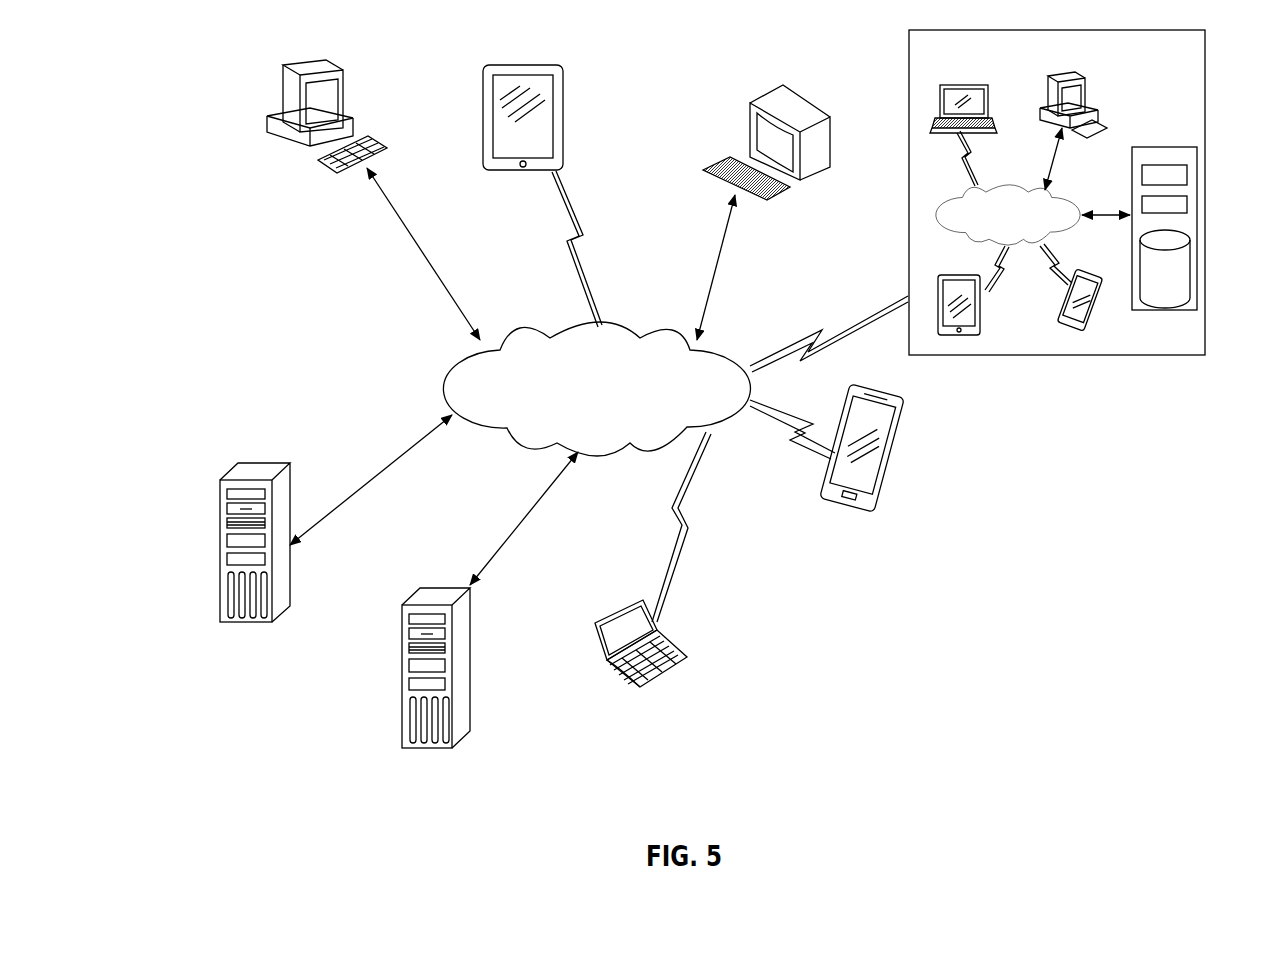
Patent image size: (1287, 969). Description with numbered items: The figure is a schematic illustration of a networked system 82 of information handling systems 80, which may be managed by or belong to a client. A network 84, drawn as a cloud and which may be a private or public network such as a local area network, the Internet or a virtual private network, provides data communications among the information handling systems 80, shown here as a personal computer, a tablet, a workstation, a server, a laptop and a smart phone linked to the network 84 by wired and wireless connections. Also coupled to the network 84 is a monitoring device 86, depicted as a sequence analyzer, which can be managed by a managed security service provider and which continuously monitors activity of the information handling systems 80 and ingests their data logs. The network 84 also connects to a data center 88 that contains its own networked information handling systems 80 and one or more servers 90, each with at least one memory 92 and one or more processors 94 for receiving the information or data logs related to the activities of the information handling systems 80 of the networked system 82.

The information handling system 80 is at (342, 58).
The networked system 82 is at (220, 321).
The network 84 is at (612, 326).
The monitoring device 86 is at (498, 790).
The data center 88 is at (1121, 357).
The server 90 is at (1165, 147).
The memory 92 is at (1190, 276).
The processor 94 is at (1188, 205).